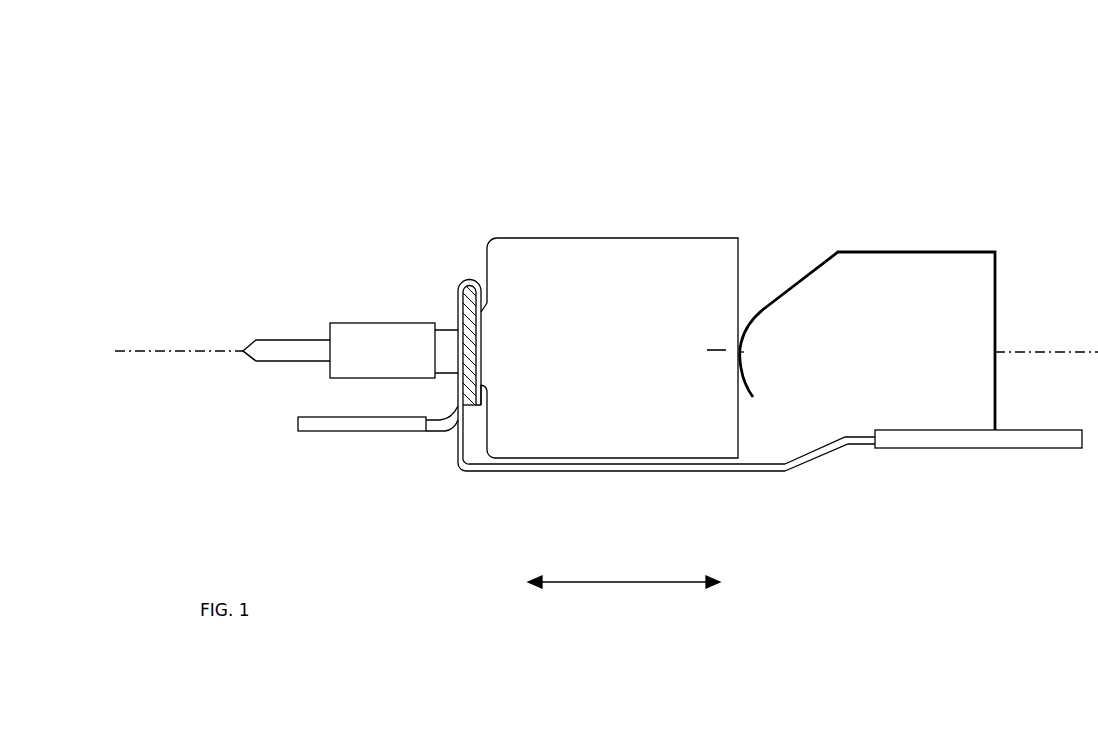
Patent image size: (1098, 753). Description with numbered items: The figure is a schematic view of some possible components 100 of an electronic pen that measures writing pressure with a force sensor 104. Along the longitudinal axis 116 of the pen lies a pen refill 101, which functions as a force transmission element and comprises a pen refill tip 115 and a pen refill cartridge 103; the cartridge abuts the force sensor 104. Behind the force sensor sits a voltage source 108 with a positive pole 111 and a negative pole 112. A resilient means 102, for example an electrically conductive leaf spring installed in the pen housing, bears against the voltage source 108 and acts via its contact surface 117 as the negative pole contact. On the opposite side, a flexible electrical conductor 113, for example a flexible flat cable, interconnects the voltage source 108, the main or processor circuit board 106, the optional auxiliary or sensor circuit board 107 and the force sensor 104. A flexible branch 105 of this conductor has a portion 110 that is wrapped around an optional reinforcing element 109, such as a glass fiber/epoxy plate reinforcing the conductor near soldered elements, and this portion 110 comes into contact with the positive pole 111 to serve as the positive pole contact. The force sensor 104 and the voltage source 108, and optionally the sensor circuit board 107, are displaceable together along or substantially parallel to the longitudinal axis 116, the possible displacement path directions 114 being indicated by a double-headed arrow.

The components of an electronic pen 100 is at (822, 132).
The pen refill 101 is at (296, 330).
The resilient means 102 is at (912, 252).
The pen refill cartridge 103 is at (362, 323).
The force sensor 104 is at (445, 328).
The flexible branch 105 is at (457, 398).
The main circuit board 106 is at (1022, 448).
The sensor circuit board 107 is at (332, 436).
The voltage source 108 is at (609, 348).
The reinforcing element 109 is at (462, 281).
The portion of the flexible branch 110 is at (471, 286).
The positive pole 111 is at (486, 328).
The negative pole 112 is at (718, 342).
The flexible electrical conductor 113 is at (680, 472).
The displacement path directions 114 is at (622, 583).
The pen refill tip 115 is at (243, 354).
The longitudinal axis 116 is at (155, 348).
The contact surface 117 is at (744, 352).